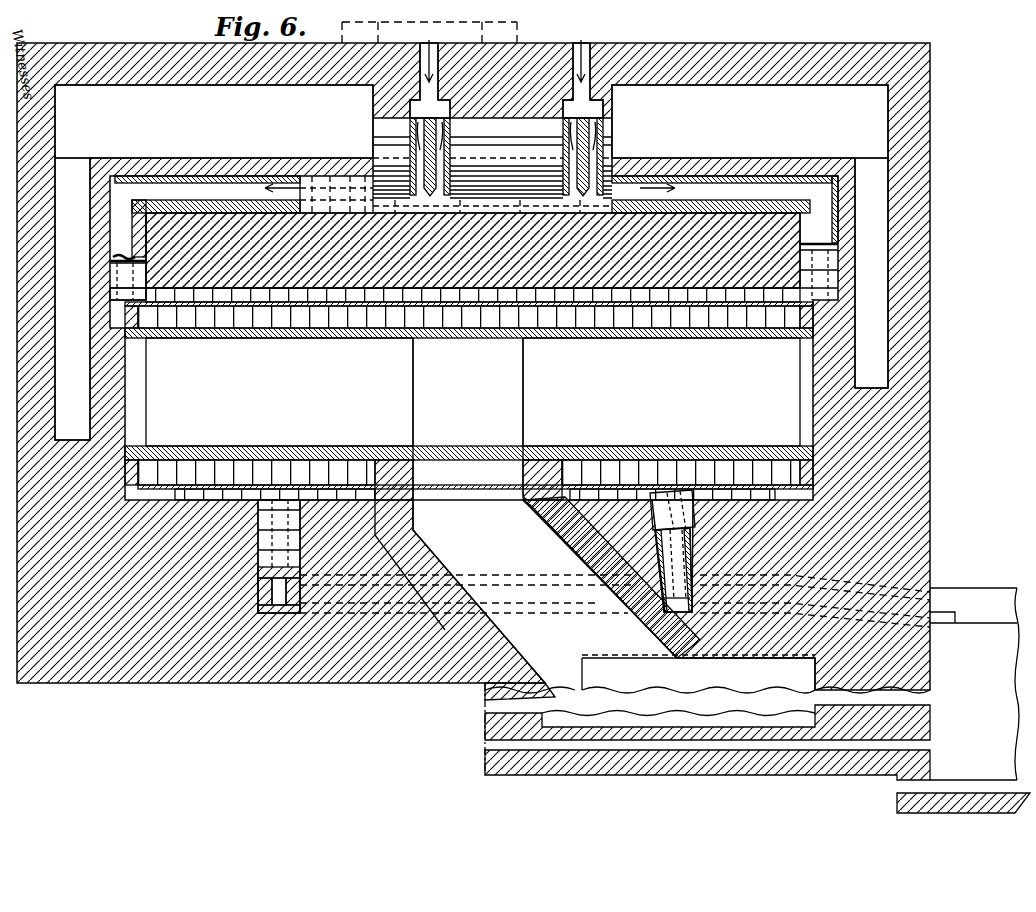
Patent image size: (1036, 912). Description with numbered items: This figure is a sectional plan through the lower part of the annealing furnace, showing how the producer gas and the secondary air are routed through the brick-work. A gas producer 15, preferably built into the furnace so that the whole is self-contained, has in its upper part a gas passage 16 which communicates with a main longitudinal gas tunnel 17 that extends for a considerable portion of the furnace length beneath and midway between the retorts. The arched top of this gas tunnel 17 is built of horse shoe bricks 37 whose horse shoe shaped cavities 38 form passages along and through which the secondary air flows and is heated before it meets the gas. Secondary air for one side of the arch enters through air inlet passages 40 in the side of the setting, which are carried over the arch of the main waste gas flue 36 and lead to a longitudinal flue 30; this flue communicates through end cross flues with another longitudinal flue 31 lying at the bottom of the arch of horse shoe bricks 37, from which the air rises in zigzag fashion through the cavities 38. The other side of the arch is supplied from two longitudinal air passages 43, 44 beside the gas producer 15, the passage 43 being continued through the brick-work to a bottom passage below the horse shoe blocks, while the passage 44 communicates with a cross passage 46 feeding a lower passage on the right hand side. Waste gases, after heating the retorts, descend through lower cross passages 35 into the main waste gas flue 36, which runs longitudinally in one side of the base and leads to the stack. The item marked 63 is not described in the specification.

The gas producer 15 is at (698, 674).
The gas passage 16 is at (545, 510).
The main longitudinal gas tunnel 17 is at (473, 392).
The longitudinal flue 30 is at (476, 232).
The longitudinal flue 31 is at (107, 305).
The lower cross passages 35 is at (471, 299).
The main waste gas flue 36 is at (471, 121).
The horse shoe bricks 37 is at (341, 300).
The horse shoe shaped cavities 38 is at (165, 318).
The air inlet passages 40 is at (588, 50).
The longitudinal air passage 43 is at (279, 613).
The longitudinal air passage 44 is at (752, 612).
The cross passage 46 is at (665, 560).
The gauge 63 is at (856, 243).